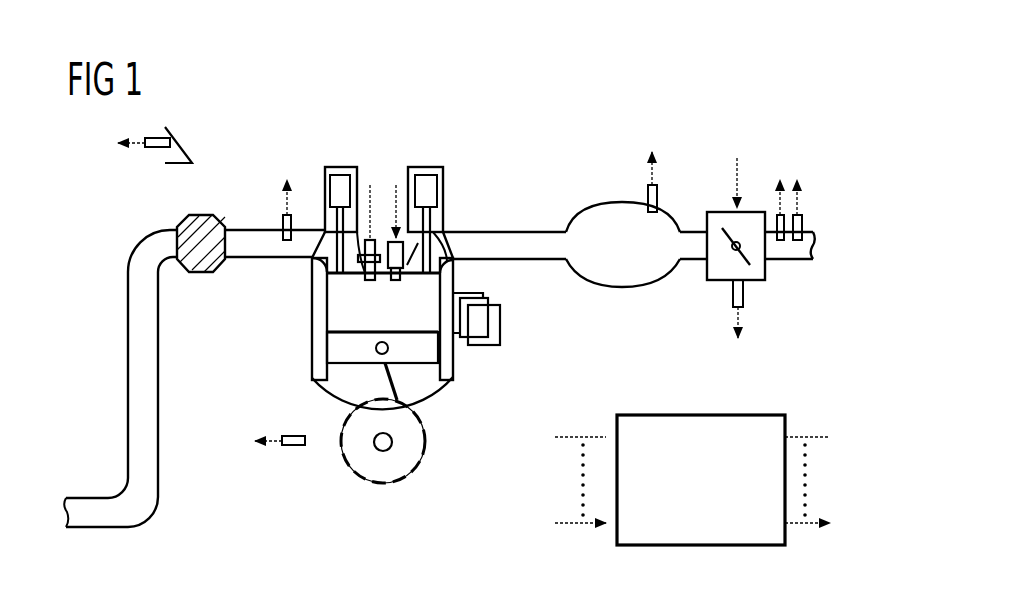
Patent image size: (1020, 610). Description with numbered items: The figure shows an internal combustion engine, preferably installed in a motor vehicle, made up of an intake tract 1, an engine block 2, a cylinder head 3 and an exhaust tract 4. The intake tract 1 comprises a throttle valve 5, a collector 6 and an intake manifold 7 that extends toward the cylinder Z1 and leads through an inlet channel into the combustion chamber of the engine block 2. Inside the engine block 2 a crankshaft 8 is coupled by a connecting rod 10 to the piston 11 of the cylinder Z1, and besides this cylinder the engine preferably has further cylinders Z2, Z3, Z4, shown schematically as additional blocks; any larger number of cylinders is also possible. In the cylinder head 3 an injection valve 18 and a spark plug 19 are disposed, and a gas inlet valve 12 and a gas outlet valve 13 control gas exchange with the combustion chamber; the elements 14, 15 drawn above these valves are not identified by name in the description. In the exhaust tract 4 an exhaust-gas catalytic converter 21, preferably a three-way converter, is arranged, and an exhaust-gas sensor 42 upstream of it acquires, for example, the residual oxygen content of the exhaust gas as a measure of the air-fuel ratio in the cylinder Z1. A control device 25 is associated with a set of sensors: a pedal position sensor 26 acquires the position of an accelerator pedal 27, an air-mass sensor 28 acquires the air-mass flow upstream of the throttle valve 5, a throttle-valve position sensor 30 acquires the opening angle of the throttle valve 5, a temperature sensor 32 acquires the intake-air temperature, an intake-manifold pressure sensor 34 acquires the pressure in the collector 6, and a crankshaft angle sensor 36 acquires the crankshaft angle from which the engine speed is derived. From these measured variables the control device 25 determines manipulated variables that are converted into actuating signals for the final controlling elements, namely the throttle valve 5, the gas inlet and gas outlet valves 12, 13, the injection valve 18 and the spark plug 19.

The intake tract 1 is at (650, 298).
The engine block 2 is at (366, 333).
The cylinder head 3 is at (382, 172).
The exhaust tract 4 is at (130, 247).
The throttle valve 5 is at (716, 222).
The collector 6 is at (660, 276).
The intake manifold 7 is at (548, 237).
The crankshaft 8 is at (395, 442).
The connecting rod 10 is at (386, 390).
The piston 11 is at (413, 355).
The gas inlet valve 12 is at (422, 280).
The gas outlet valve 13 is at (328, 277).
The exhaust valve actuator 14 is at (427, 160).
The intake valve actuator 15 is at (337, 163).
The injection valve 18 is at (397, 282).
The spark plug 19 is at (372, 280).
The exhaust-gas catalytic converter 21 is at (205, 263).
The control device 25 is at (723, 420).
The pedal position sensor 26 is at (150, 150).
The accelerator pedal 27 is at (187, 138).
The air-mass sensor 28 is at (777, 222).
The throttle-valve position sensor 30 is at (745, 295).
The temperature sensor 32 is at (803, 224).
The intake-manifold pressure sensor 34 is at (660, 196).
The crankshaft angle sensor 36 is at (290, 445).
The exhaust-gas sensor 42 is at (283, 222).
The cylinder Z1 is at (445, 348).
The further cylinder Z2 is at (490, 327).
The further cylinder Z3 is at (494, 302).
The further cylinder Z4 is at (484, 297).